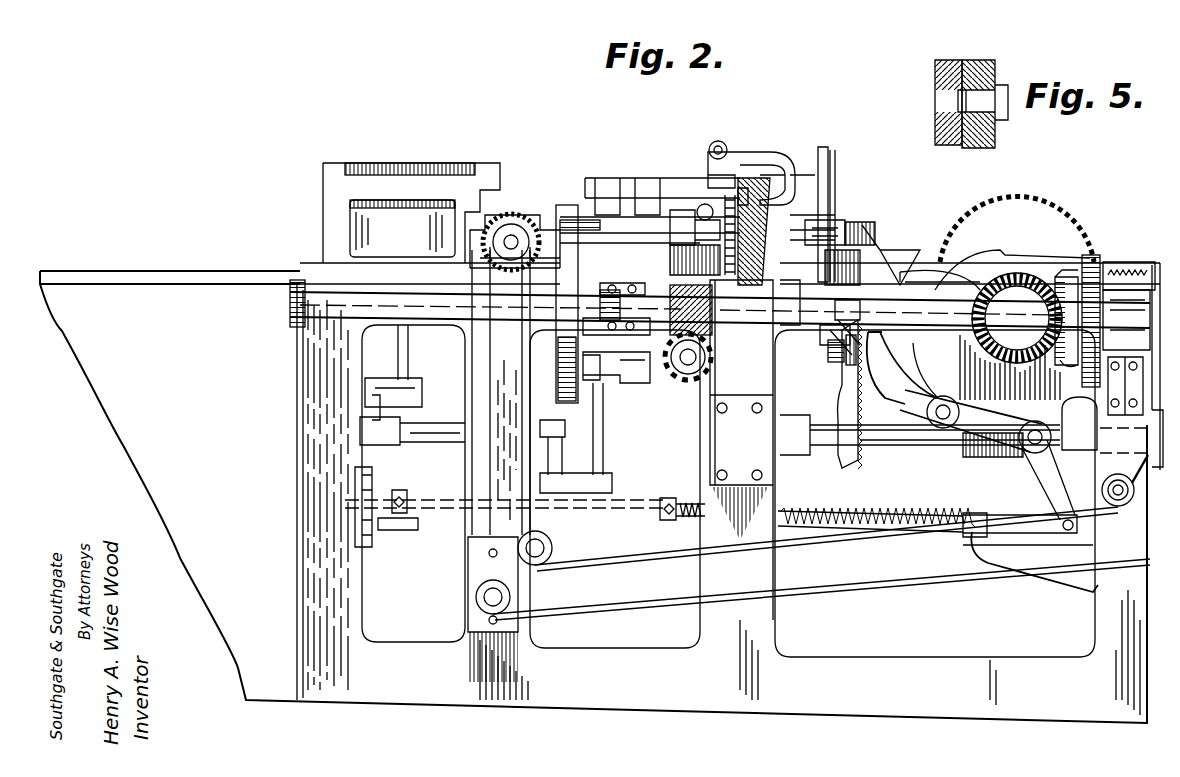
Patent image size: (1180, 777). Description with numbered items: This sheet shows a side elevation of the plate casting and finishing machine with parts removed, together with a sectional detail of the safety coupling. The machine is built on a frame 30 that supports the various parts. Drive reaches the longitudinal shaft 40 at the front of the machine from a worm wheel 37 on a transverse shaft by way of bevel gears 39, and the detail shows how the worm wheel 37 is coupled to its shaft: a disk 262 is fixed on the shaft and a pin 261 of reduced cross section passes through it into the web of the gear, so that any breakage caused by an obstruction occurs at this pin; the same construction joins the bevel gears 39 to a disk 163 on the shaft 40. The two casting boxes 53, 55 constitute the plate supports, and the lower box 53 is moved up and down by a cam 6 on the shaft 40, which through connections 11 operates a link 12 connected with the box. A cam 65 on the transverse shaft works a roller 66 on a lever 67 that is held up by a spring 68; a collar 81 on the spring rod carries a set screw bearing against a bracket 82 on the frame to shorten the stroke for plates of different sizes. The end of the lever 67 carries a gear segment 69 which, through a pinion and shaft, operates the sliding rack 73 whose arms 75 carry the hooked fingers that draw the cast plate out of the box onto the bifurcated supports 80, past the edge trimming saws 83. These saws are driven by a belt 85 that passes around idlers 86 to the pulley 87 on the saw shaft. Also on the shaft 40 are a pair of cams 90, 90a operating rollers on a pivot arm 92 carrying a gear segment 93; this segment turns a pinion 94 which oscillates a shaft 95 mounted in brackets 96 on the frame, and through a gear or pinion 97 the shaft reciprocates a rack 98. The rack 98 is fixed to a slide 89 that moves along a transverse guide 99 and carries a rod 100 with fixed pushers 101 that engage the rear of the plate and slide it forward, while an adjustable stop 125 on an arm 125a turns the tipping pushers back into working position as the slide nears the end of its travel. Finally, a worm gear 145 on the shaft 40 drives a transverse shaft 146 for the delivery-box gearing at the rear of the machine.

In FIG. 2, the frame 30 is at (760, 622).
In FIG. 2, the upper casting box 55 is at (410, 172).
In FIG. 2, the lower casting box 53 is at (402, 228).
In FIG. 2, the edge trimming saws 83 is at (522, 222).
In FIG. 2, the pulley on saw shaft 87 is at (509, 236).
In FIG. 2, the longitudinal shaft 40 is at (455, 305).
In FIG. 2, the cam 6 is at (558, 378).
In FIG. 2, the link 12 is at (399, 343).
In FIG. 2, the connections 11 is at (556, 460).
In FIG. 2, the collar 81 is at (420, 490).
In FIG. 2, the bracket 82 is at (370, 532).
In FIG. 2, the idlers 86 is at (1120, 522).
In FIG. 2, the belt 85 is at (960, 568).
In FIG. 2, the spring 68 is at (822, 522).
In FIG. 2, the transverse guide 99 is at (930, 450).
In FIG. 2, the worm gear 145 is at (712, 330).
In FIG. 2, the transverse shaft 146 is at (688, 360).
In FIG. 2, the supports 80 is at (605, 226).
In FIG. 2, the rod 100 is at (690, 186).
In FIG. 2, the pushers 101 is at (604, 178).
In FIG. 2, the rack 98 is at (748, 190).
In FIG. 2, the adjustable stop 125 is at (710, 150).
In FIG. 2, the arm 125a is at (730, 188).
In FIG. 2, the gear or pinion 97 is at (758, 210).
In FIG. 2, the slide 89 is at (793, 225).
In FIG. 2, the gear segment 93 is at (826, 150).
In FIG. 2, the pivot arm 92 is at (838, 218).
In FIG. 2, the pinion 94 is at (848, 225).
In FIG. 2, the arms 75 is at (848, 238).
In FIG. 2, the shaft 95 is at (880, 225).
In FIG. 2, the brackets 96 is at (878, 262).
In FIG. 2, the sliding rack 73 is at (920, 268).
In FIG. 2, the cam 65 is at (985, 262).
In FIG. 2, the worm wheel 37 is at (1052, 238).
In FIG. 5, the worm wheel 37 is at (955, 62).
In FIG. 2, the bevel gears 39 is at (1070, 330).
In FIG. 2, the disk 163 is at (1098, 268).
In FIG. 2, the cam 90 is at (842, 348).
In FIG. 2, the cam 90a is at (858, 350).
In FIG. 2, the gear segment 69 is at (845, 448).
In FIG. 2, the lever 67 is at (908, 392).
In FIG. 2, the roller 66 is at (916, 447).
In FIG. 5, the pin 261 is at (992, 62).
In FIG. 5, the disk 262 is at (988, 100).